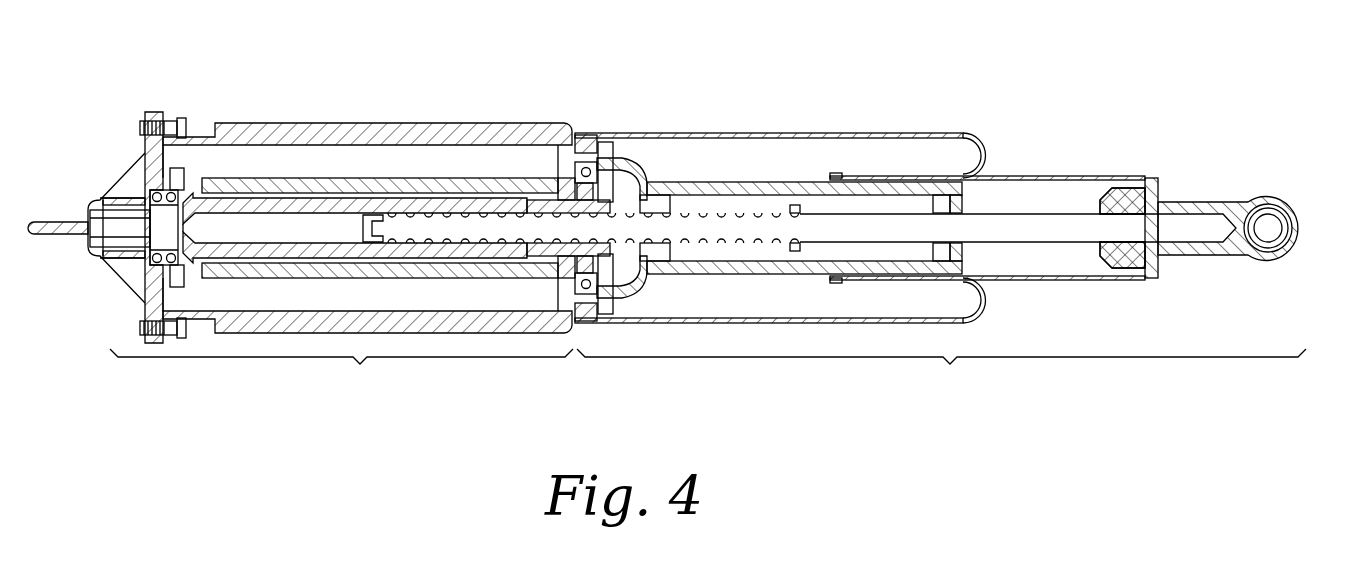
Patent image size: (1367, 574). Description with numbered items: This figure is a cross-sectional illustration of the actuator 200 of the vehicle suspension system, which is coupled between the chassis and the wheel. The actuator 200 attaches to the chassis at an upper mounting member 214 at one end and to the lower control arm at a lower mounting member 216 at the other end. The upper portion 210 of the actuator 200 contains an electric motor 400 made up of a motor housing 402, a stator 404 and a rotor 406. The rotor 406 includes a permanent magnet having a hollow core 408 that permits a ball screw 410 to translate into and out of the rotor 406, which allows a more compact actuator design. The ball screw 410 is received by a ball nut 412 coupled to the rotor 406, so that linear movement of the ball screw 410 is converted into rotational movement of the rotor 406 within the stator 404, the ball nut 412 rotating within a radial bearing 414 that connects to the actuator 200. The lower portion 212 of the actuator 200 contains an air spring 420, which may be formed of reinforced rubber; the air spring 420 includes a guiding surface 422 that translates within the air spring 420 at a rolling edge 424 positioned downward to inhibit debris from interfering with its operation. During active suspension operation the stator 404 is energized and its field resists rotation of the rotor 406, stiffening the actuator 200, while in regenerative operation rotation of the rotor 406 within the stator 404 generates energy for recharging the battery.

The actuator 200 is at (565, 66).
The upper portion 210 is at (341, 373).
The lower portion 212 is at (941, 374).
The upper mounting member 214 is at (153, 170).
The lower mounting member 216 is at (1270, 218).
The electric motor 400 is at (322, 113).
The motor housing 402 is at (293, 128).
The stator 404 is at (360, 163).
The rotor 406 is at (513, 185).
The hollow core 408 is at (237, 225).
The ball screw 410 is at (753, 227).
The ball nut 412 is at (580, 197).
The radial bearing 414 is at (582, 195).
The air spring 420 is at (848, 133).
The guiding surface 422 is at (1100, 178).
The rolling edge 424 is at (983, 156).